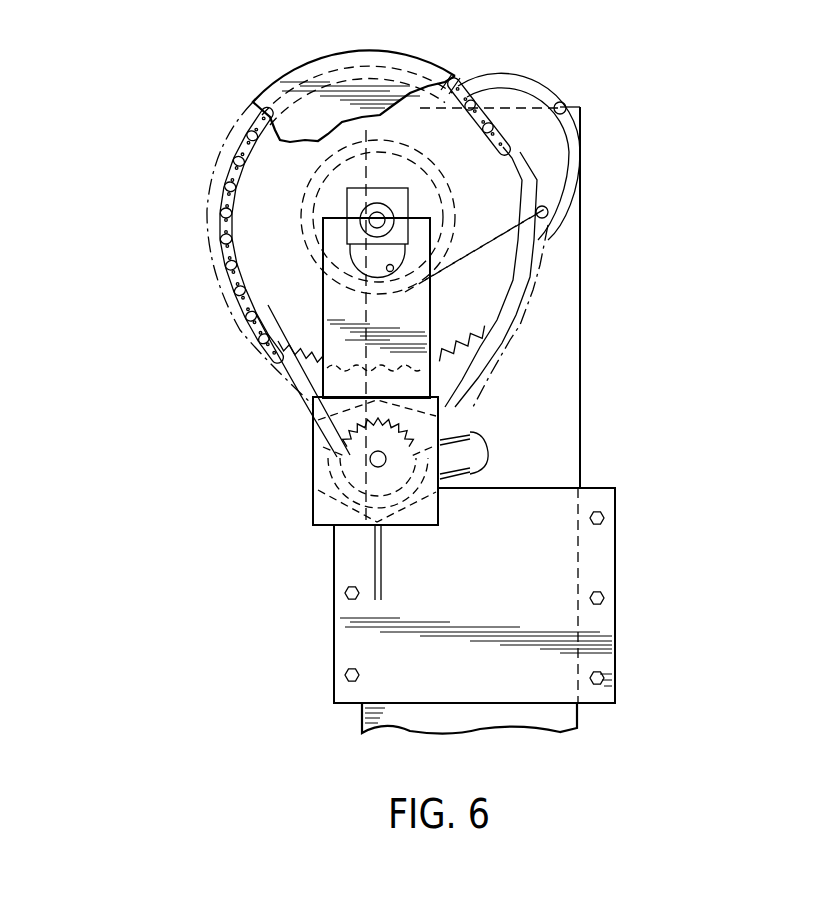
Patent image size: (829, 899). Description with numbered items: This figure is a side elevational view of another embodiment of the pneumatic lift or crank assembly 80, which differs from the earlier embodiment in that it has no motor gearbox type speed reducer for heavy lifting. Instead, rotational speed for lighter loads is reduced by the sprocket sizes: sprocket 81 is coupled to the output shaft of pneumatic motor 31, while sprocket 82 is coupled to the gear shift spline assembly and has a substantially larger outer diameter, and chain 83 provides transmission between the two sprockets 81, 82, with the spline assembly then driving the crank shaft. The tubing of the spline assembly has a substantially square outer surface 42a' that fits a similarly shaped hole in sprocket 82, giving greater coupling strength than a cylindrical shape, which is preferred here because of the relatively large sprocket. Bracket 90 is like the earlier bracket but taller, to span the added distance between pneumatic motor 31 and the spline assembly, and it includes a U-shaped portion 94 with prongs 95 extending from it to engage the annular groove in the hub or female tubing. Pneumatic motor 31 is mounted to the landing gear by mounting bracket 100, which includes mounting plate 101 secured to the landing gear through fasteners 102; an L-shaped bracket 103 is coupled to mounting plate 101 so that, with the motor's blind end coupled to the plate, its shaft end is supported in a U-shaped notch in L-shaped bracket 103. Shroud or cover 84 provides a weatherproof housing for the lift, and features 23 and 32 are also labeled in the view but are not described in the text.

The pneumatic lift or crank assembly 80 is at (137, 198).
The shroud or cover 84 is at (290, 105).
The tensioner arm 23 is at (547, 87).
The substantially square outer surface 42a' is at (409, 207).
The prongs 95 is at (325, 232).
The U-shaped portion 94 is at (392, 271).
The sprocket 82 is at (287, 307).
The bracket 90 is at (430, 328).
The chain 83 is at (287, 372).
The pneumatic motor 31 is at (440, 407).
The sprocket 81 is at (350, 457).
The connector 32 is at (488, 452).
The L-shaped bracket 103 is at (320, 502).
The mounting bracket 100 is at (314, 573).
The mounting plate 101 is at (617, 523).
The fasteners 102 is at (343, 594).